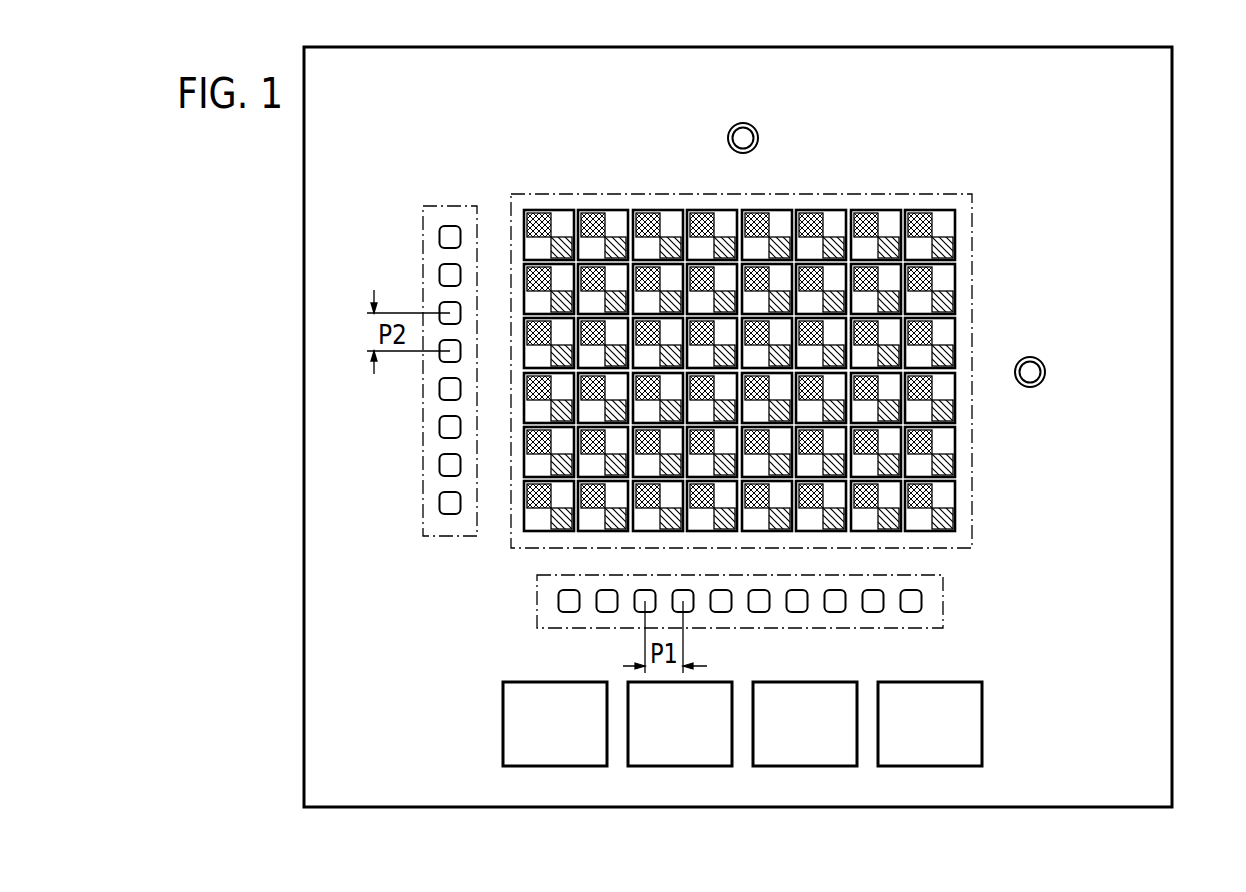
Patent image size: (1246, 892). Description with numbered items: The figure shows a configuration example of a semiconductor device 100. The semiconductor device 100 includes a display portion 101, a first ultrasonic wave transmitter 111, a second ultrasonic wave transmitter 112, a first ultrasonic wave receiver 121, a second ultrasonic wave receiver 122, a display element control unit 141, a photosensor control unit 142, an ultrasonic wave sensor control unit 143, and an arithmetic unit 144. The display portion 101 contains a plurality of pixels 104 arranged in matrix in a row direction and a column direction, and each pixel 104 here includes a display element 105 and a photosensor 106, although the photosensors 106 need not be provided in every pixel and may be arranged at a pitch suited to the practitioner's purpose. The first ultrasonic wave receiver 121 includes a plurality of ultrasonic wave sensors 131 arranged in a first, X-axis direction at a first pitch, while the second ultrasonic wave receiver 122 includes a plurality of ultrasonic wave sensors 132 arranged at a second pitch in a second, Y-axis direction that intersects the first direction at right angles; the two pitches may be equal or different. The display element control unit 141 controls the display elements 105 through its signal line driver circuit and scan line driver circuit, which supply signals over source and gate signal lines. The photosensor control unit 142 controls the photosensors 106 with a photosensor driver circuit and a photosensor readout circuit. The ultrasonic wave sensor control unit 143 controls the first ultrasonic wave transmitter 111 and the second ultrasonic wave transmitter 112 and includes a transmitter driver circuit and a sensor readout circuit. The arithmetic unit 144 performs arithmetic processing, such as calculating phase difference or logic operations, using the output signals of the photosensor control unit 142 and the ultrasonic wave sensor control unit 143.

The semiconductor device 100 is at (1172, 148).
The display portion 101 is at (565, 193).
The pixel 104 is at (673, 210).
The display element 105 is at (863, 212).
The photosensor 106 is at (942, 240).
The first ultrasonic wave transmitter 111 is at (743, 138).
The second ultrasonic wave transmitter 112 is at (1030, 372).
The first ultrasonic wave receiver 121 is at (943, 602).
The second ultrasonic wave receiver 122 is at (445, 205).
The ultrasonic wave sensor 131 is at (569, 601).
The ultrasonic wave sensor 132 is at (450, 503).
The display element control unit 141 is at (555, 724).
The photosensor control unit 142 is at (680, 724).
The ultrasonic wave sensor control unit 143 is at (805, 724).
The arithmetic unit 144 is at (930, 724).